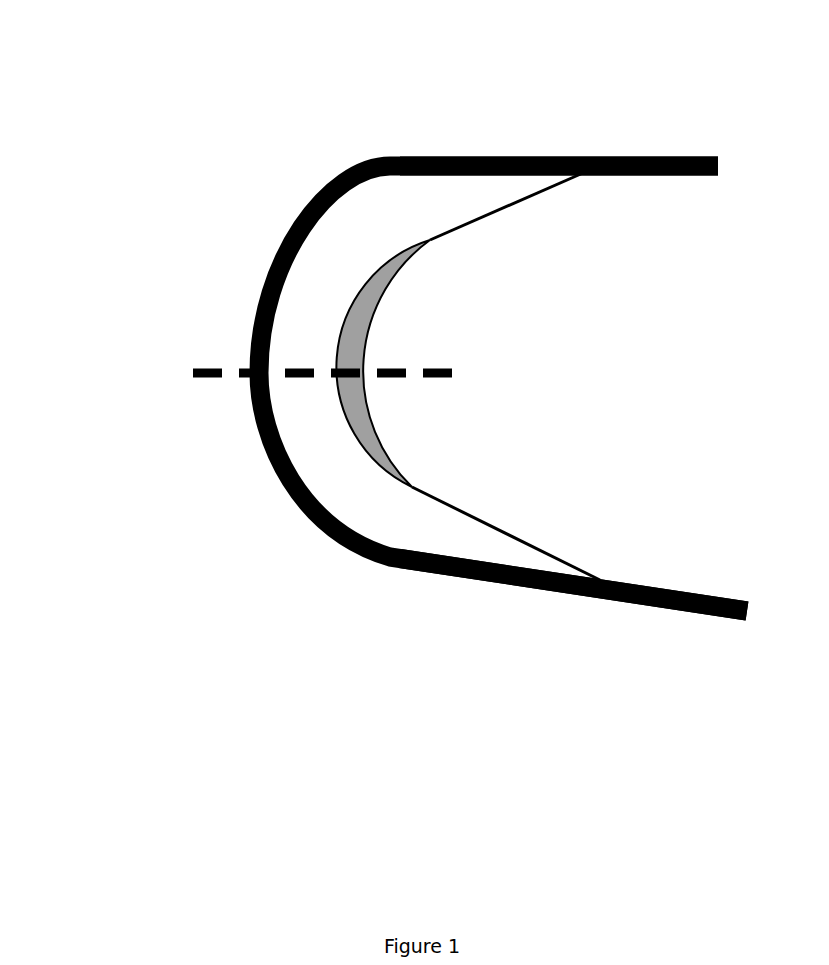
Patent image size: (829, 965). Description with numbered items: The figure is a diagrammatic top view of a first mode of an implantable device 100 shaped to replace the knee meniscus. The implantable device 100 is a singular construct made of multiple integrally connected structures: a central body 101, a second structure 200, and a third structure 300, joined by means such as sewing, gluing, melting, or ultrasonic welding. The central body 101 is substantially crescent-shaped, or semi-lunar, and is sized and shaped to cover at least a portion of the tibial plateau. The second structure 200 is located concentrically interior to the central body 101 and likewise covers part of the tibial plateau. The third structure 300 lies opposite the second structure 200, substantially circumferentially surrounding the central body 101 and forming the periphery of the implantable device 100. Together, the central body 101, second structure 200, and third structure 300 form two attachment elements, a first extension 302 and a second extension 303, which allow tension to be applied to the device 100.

The implantable device 100 is at (243, 250).
The central body 101 is at (283, 343).
The second structure 200 is at (370, 403).
The third structure 300 is at (273, 472).
The first extension 302 is at (672, 158).
The second extension 303 is at (675, 610).